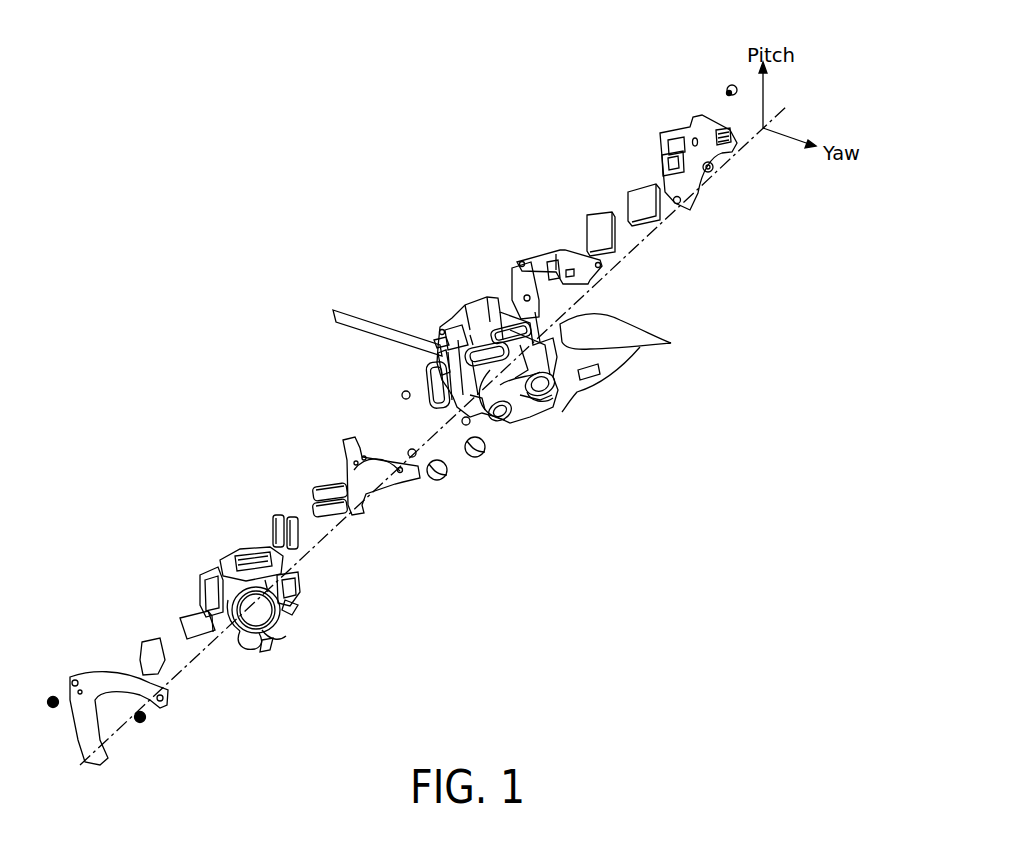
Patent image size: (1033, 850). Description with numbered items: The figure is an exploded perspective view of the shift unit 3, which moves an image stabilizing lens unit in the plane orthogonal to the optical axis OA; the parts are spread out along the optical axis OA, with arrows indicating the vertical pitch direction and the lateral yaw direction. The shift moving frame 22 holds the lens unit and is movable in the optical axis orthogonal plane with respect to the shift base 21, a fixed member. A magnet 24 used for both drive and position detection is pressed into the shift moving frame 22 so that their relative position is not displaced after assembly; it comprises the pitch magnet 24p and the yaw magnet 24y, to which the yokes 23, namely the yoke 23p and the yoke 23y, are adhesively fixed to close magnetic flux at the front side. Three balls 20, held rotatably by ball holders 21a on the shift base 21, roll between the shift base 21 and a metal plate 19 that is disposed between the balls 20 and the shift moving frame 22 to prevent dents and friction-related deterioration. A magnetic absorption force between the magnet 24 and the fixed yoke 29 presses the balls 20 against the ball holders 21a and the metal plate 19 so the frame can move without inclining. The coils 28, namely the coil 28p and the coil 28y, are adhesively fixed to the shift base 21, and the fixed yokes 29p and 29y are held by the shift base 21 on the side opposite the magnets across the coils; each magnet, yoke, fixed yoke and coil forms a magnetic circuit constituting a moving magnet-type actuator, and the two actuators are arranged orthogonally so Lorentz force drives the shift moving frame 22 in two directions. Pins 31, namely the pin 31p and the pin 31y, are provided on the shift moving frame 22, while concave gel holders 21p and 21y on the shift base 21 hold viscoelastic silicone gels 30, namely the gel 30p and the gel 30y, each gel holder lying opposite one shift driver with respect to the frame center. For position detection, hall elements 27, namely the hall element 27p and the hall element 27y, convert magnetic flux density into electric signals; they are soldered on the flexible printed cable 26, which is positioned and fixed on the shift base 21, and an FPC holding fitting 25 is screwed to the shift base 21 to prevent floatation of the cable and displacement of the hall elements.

The shift unit 3 is at (699, 62).
The metal plate 19 is at (345, 443).
The ball 20 is at (409, 451).
The shift base 21 is at (472, 302).
The ball holder 21a is at (519, 361).
The gel holder 21y is at (549, 395).
The gel holder 21p is at (508, 423).
The shift moving frame 22 is at (227, 552).
The yoke 23 is at (153, 565).
The yoke 23y is at (140, 642).
The yoke 23p is at (187, 618).
The magnet 24 is at (300, 433).
The magnet 24y is at (278, 517).
The magnet 24p is at (315, 500).
The FPC holding fitting 25 is at (690, 132).
The flexible printed cable 26 is at (565, 253).
The hall element 27 is at (498, 181).
The hall element 27y is at (517, 292).
The hall element 27p is at (545, 257).
The coil 28 is at (405, 253).
The coil 28y is at (438, 353).
The coil 28p is at (434, 340).
The fixed yoke 29 is at (624, 141).
The fixed yoke 29y is at (593, 237).
The fixed yoke 29p is at (620, 194).
The gel 30 is at (567, 503).
The gel 30y is at (482, 457).
The gel 30p is at (444, 480).
The pin 31 is at (368, 618).
The pin 31y is at (298, 605).
The pin 31p is at (273, 638).
The optical axis OA is at (651, 237).